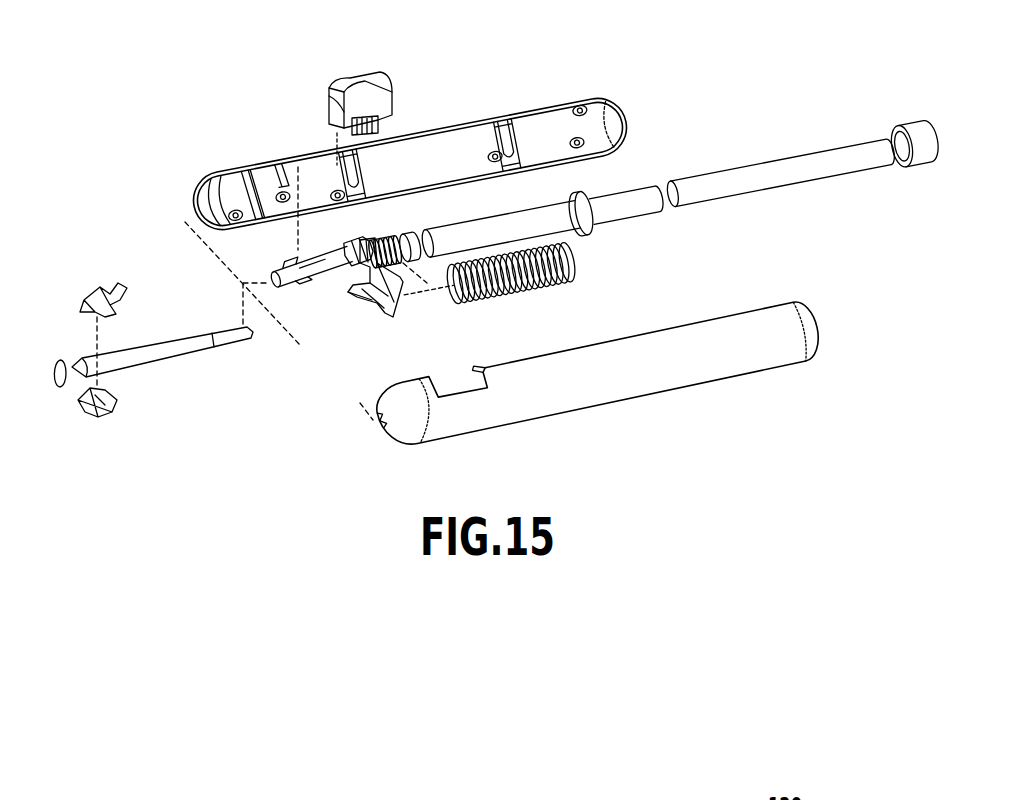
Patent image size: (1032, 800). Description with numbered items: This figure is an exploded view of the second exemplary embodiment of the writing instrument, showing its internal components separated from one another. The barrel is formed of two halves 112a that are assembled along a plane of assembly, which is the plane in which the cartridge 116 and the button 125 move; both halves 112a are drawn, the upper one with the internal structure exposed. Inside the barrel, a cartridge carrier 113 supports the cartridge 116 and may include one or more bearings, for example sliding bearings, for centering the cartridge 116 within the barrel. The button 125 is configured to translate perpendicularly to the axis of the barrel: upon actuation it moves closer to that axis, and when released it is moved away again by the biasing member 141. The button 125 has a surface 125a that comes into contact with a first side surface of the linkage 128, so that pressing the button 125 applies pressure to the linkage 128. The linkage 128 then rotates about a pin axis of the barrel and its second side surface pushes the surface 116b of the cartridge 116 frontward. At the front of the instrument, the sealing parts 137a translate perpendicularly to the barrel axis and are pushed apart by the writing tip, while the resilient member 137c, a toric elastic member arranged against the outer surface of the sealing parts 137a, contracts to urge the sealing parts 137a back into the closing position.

The half of the barrel 112a is at (506, 245).
The cartridge carrier 113 is at (500, 143).
The cartridge 116 is at (343, 283).
The surface of the cartridge 116b is at (345, 245).
The button 125 is at (401, 83).
The surface of the button 125a is at (390, 119).
The linkage 128 is at (406, 334).
The sealing parts 137a is at (97, 291).
The resilient member 137c is at (55, 362).
The biasing member 141 is at (565, 272).